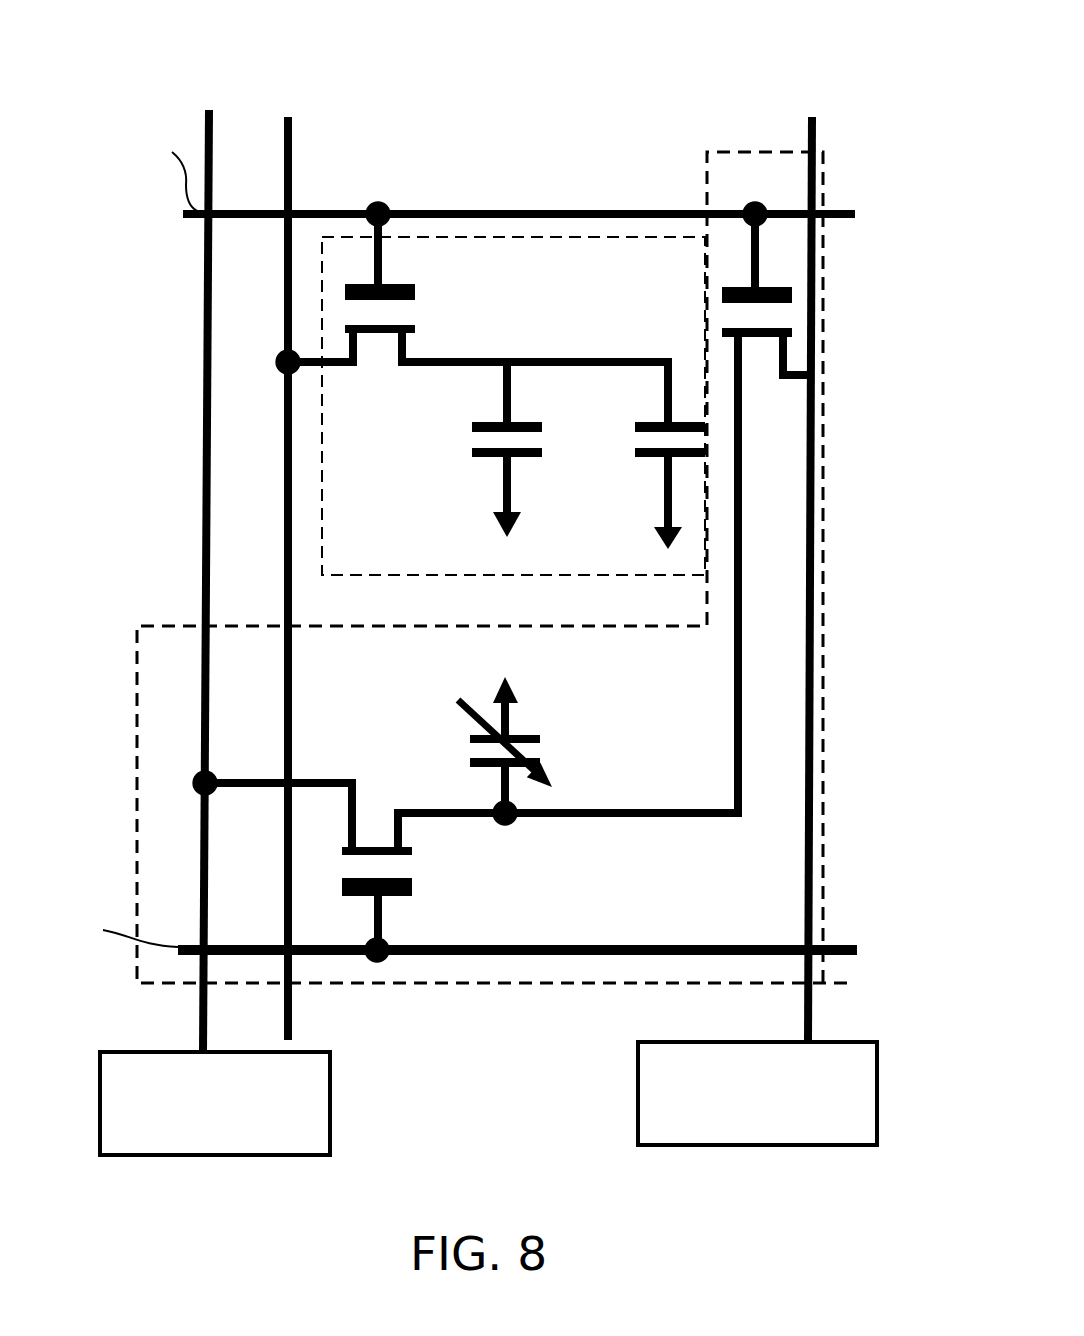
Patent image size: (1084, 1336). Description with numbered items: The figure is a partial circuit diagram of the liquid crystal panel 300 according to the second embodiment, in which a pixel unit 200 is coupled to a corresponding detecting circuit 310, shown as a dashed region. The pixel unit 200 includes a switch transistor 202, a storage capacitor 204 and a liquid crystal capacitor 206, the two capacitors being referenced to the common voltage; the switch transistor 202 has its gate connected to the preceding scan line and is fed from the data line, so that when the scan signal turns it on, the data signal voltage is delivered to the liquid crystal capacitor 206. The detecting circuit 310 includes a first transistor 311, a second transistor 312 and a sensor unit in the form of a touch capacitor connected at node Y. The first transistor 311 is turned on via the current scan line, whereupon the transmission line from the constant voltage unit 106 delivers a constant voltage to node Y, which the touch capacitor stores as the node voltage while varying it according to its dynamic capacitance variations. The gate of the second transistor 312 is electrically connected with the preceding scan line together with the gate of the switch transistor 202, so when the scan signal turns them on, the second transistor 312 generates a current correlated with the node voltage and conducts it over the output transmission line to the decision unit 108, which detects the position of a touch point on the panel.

The liquid crystal panel 300 is at (540, 47).
The pixel unit 200 is at (545, 237).
The switch transistor 202 is at (400, 280).
The storage capacitor 204 is at (514, 422).
The liquid crystal capacitor 206 is at (660, 422).
The detecting circuit 310 is at (768, 152).
The first transistor 311 is at (400, 897).
The second transistor 312 is at (793, 291).
The constant voltage unit 106 is at (257, 1155).
The decision unit 108 is at (737, 1145).